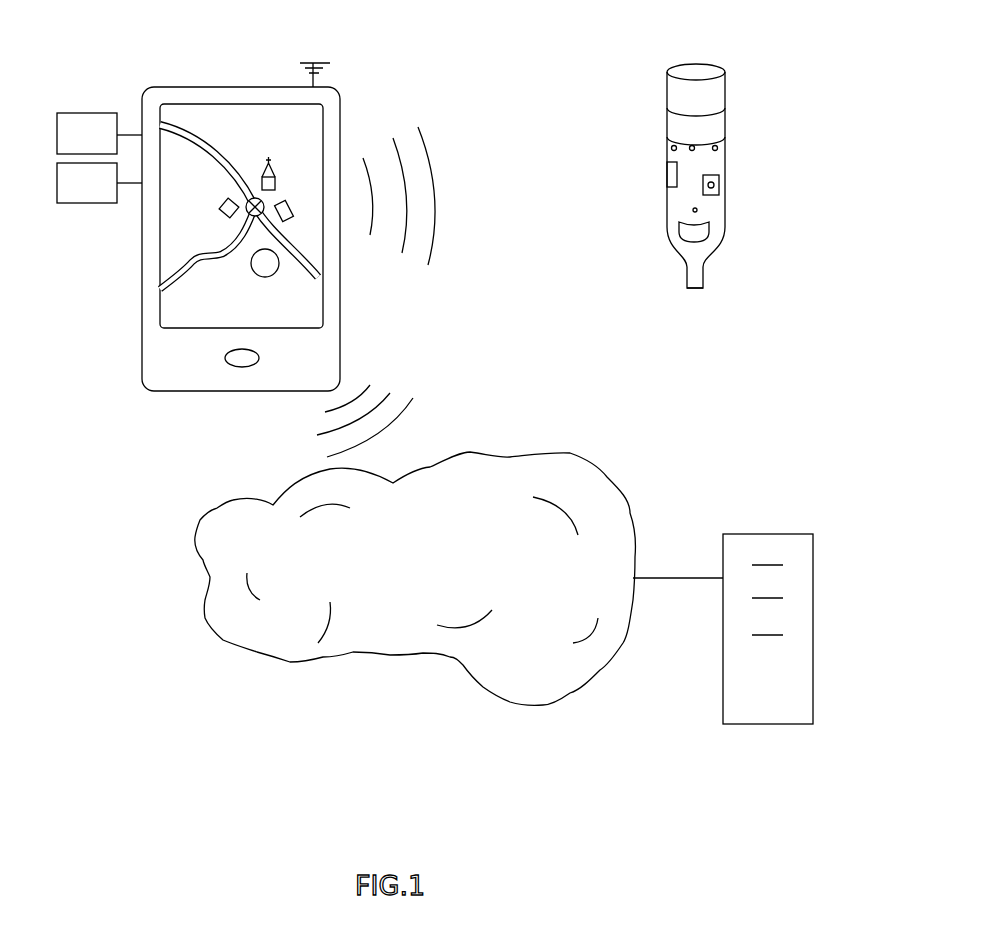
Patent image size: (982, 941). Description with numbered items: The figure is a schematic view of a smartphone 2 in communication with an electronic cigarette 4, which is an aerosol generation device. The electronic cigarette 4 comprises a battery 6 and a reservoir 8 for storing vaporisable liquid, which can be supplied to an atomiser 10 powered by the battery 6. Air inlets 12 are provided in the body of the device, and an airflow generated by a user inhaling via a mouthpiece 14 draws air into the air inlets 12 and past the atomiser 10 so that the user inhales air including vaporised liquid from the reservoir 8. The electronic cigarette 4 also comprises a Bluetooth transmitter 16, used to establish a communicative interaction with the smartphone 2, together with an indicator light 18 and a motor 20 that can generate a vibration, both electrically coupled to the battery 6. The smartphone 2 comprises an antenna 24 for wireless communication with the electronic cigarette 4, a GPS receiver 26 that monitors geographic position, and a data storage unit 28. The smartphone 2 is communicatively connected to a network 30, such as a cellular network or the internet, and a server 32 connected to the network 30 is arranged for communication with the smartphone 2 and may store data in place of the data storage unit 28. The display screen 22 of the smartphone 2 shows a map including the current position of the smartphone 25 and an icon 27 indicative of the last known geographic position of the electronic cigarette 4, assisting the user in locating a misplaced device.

The smartphone 2 is at (108, 243).
The electronic cigarette 4 is at (660, 243).
The battery 6 is at (702, 90).
The reservoir 8 is at (672, 120).
The atomiser 10 is at (705, 228).
The air inlets 12 is at (717, 147).
The mouthpiece 14 is at (700, 278).
The Bluetooth transmitter 16 is at (667, 172).
The indicator light 18 is at (693, 210).
The motor 20 is at (712, 178).
The display screen 22 is at (262, 117).
The antenna 24 is at (318, 64).
The current position of the smartphone 25 is at (247, 201).
The GPS receiver 26 is at (102, 199).
The icon 27 is at (274, 276).
The data storage unit 28 is at (102, 150).
The network 30 is at (440, 569).
The server 32 is at (786, 712).